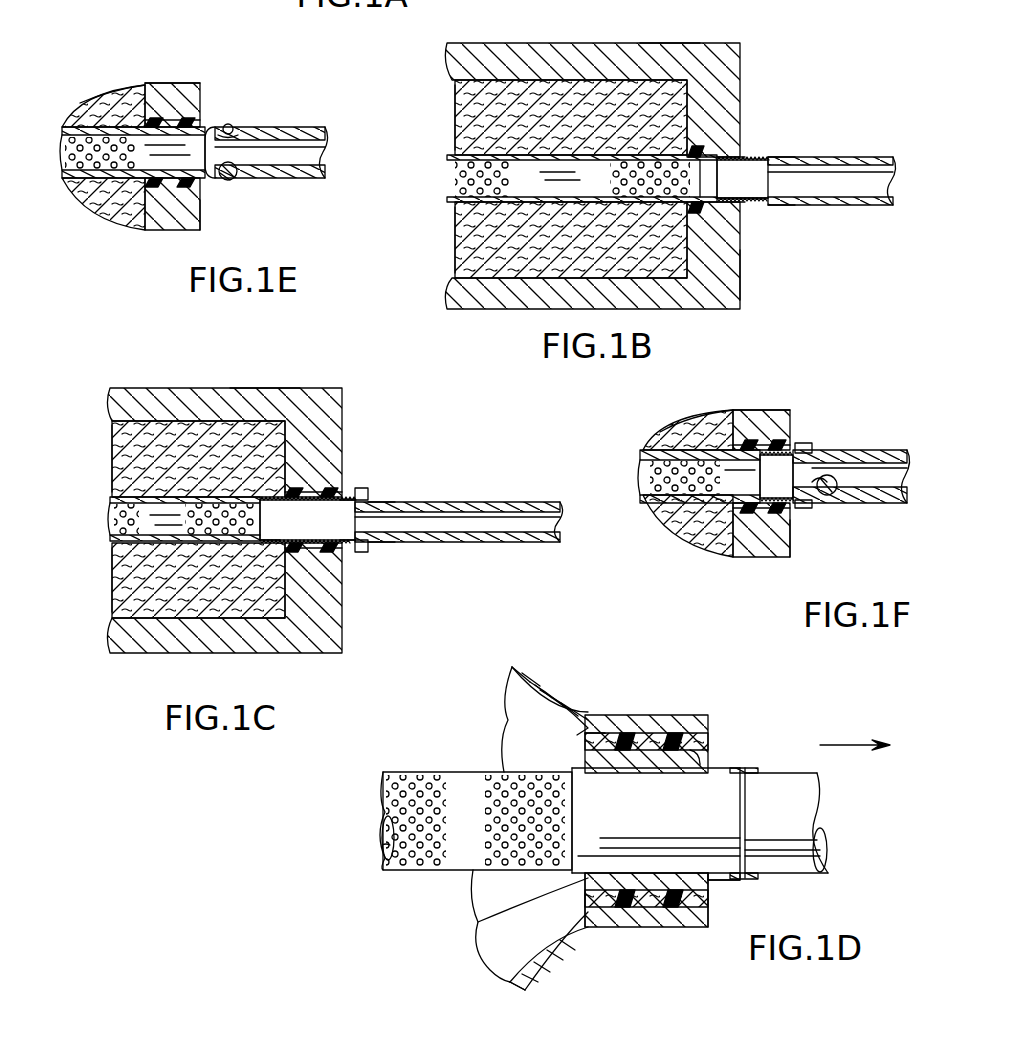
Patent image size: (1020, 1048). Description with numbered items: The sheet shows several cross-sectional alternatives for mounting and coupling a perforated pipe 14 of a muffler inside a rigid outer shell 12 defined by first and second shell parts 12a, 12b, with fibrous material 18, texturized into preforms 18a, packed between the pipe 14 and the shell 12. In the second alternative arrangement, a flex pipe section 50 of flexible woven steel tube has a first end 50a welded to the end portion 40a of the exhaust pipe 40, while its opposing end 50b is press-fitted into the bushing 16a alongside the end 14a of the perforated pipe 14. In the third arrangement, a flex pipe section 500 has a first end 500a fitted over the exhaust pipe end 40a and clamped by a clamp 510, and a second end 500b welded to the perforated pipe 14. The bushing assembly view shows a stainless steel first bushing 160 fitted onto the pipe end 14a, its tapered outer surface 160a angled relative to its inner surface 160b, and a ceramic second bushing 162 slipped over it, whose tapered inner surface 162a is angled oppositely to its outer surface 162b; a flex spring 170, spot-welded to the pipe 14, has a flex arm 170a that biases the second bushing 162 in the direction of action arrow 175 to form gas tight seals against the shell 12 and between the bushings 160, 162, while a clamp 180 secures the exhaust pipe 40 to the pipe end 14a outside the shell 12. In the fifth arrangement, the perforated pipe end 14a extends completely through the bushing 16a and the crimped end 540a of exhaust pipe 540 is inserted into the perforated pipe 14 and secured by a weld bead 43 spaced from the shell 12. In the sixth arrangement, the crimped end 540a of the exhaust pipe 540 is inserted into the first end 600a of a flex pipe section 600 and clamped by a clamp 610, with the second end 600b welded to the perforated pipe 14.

In FIG. 1B, the rigid outer shell 12 is at (742, 74).
In FIG. 1E, the rigid outer shell 12 is at (187, 84).
In FIG. 1C, the rigid outer shell 12 is at (344, 406).
In FIG. 1F, the rigid outer shell 12 is at (766, 418).
In FIG. 1D, the rigid outer shell 12 is at (540, 688).
In FIG. 1B, the first shell part 12a is at (676, 58).
In FIG. 1E, the first shell part 12a is at (158, 84).
In FIG. 1C, the first shell part 12a is at (283, 392).
In FIG. 1F, the first shell part 12a is at (746, 418).
In FIG. 1D, the first shell part 12a is at (560, 707).
In FIG. 1B, the second shell part 12b is at (742, 291).
In FIG. 1E, the second shell part 12b is at (168, 213).
In FIG. 1F, the second shell part 12b is at (746, 541).
In FIG. 1D, the second shell part 12b is at (560, 975).
In FIG. 1B, the perforated pipe 14 is at (453, 177).
In FIG. 1E, the perforated pipe 14 is at (88, 165).
In FIG. 1C, the perforated pipe 14 is at (110, 522).
In FIG. 1F, the perforated pipe 14 is at (661, 483).
In FIG. 1D, the perforated pipe 14 is at (400, 815).
In FIG. 1B, the end of perforated pipe 14a is at (700, 150).
In FIG. 1E, the end of perforated pipe 14a is at (206, 182).
In FIG. 1C, the end of perforated pipe 14a is at (245, 548).
In FIG. 1F, the end of perforated pipe 14a is at (718, 503).
In FIG. 1D, the end of perforated pipe 14a is at (722, 882).
In FIG. 1B, the bushing 16a is at (723, 152).
In FIG. 1E, the bushing 16a is at (183, 122).
In FIG. 1C, the bushing 16a is at (310, 487).
In FIG. 1F, the bushing 16a is at (786, 445).
In FIG. 1B, the fibrous material 18 is at (455, 131).
In FIG. 1E, the fibrous material 18 is at (82, 106).
In FIG. 1C, the fibrous material 18 is at (112, 465).
In FIG. 1F, the fibrous material 18 is at (660, 440).
In FIG. 1B, the preform 18a is at (456, 113).
In FIG. 1E, the preform 18a is at (113, 92).
In FIG. 1C, the preform 18a is at (114, 440).
In FIG. 1F, the preform 18a is at (707, 425).
In FIG. 1B, the first exhaust pipe 40 is at (862, 157).
In FIG. 1C, the first exhaust pipe 40 is at (488, 502).
In FIG. 1D, the first exhaust pipe 40 is at (808, 806).
In FIG. 1B, the end portion of first exhaust pipe 40a is at (784, 158).
In FIG. 1C, the end portion of first exhaust pipe 40a is at (376, 524).
In FIG. 1E, the weld bead 43 is at (232, 125).
In FIG. 1B, the flex pipe section 50 is at (742, 208).
In FIG. 1B, the first end of flex pipe section 50a is at (752, 206).
In FIG. 1B, the opposing end of flex pipe section 50b is at (727, 215).
In FIG. 1C, the flex pipe section 500 is at (333, 578).
In FIG. 1C, the first end of flex pipe section 500a is at (385, 503).
In FIG. 1C, the second end of flex pipe section 500b is at (268, 548).
In FIG. 1C, the clamp 510 is at (361, 490).
In FIG. 1E, the first exhaust pipe 540 is at (282, 130).
In FIG. 1F, the first exhaust pipe 540 is at (880, 506).
In FIG. 1E, the crimped end of first exhaust pipe 540a is at (240, 174).
In FIG. 1F, the crimped end of first exhaust pipe 540a is at (830, 498).
In FIG. 1F, the flex pipe section 600 is at (794, 455).
In FIG. 1F, the first end of flex pipe section 600a is at (815, 448).
In FIG. 1F, the second end of flex pipe section 600b is at (781, 515).
In FIG. 1F, the clamp 610 is at (800, 512).
In FIG. 1D, the first bushing 160 is at (708, 768).
In FIG. 1D, the outer surface of first bushing 160a is at (678, 928).
In FIG. 1D, the inner surface of first bushing 160b is at (636, 900).
In FIG. 1D, the second bushing 162 is at (650, 738).
In FIG. 1D, the inner surface of second bushing 162a is at (705, 765).
In FIG. 1D, the outer surface of second bushing 162b is at (625, 718).
In FIG. 1D, the flex spring 170 is at (560, 832).
In FIG. 1D, the flex arm 170a is at (478, 922).
In FIG. 1D, the action arrow 175 is at (845, 745).
In FIG. 1D, the clamp 180 is at (745, 768).